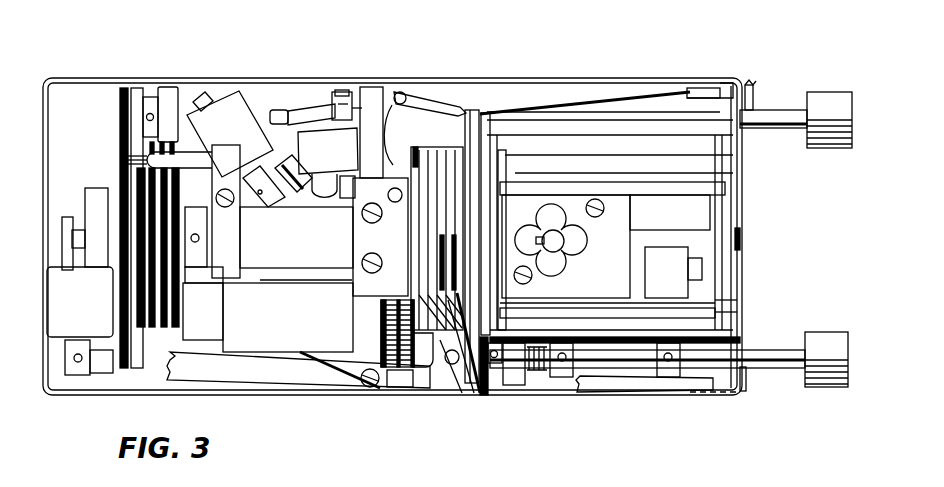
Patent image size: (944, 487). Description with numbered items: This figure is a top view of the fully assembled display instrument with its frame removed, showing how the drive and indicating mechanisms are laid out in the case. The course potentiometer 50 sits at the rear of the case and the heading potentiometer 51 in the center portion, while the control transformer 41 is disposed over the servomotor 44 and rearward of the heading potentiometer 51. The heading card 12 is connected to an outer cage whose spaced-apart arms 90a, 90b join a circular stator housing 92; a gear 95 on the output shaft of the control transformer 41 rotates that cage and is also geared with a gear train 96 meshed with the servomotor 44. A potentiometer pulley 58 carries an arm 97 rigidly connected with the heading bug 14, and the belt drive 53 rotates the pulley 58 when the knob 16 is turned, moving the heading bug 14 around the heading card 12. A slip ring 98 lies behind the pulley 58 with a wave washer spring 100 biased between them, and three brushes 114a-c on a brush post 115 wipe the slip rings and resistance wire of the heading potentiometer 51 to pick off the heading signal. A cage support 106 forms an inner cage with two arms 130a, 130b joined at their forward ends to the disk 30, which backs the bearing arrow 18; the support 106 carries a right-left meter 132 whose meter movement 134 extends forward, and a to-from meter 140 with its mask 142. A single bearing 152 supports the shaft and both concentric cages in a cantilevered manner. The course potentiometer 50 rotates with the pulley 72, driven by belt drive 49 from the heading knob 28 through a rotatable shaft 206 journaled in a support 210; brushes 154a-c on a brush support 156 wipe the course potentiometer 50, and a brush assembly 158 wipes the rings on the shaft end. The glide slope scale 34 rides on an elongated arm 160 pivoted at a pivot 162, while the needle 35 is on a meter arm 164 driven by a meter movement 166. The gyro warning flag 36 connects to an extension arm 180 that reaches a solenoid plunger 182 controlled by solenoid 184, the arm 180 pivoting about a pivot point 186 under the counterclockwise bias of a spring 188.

The heading card 12 is at (738, 270).
The heading bug 14 is at (743, 135).
The knob 16 is at (845, 360).
The bearing arrow 18 is at (742, 239).
The heading knob 28 is at (830, 95).
The disk 30 is at (733, 296).
The glide slope scale 34 is at (752, 85).
The needle 35 is at (758, 84).
The gyro warning flag 36 is at (748, 378).
The control transformer 41 is at (298, 331).
The servomotor 44 is at (212, 345).
The belt drive 49 is at (137, 88).
The course potentiometer 50 is at (175, 140).
The heading potentiometer 51 is at (472, 110).
The belt drive 53 is at (488, 113).
The potentiometer pulley 58 is at (507, 150).
The pulley 72 is at (126, 122).
The arm 90a is at (725, 342).
The arm 90b is at (723, 195).
The circular stator housing 92 is at (490, 393).
The gear 95 is at (400, 372).
The gear train 96 is at (448, 368).
The arm 97 is at (628, 97).
The slip ring 98 is at (390, 135).
The wave washer spring 100 is at (420, 150).
The cage support 106 is at (530, 117).
The brushes 114a-c is at (483, 398).
The brush post 115 is at (408, 280).
The arm 130a is at (690, 88).
The arm 130b is at (737, 306).
The right-left meter 132 is at (617, 280).
The meter movement 134 is at (560, 241).
The to-from meter 140 is at (680, 280).
The mask 142 is at (683, 221).
The bearing 152 is at (304, 250).
The leads 154a-c is at (145, 158).
The brush support 156 is at (204, 152).
The brush assembly 158 is at (80, 235).
The elongated arm 160 is at (667, 157).
The pivot 162 is at (404, 92).
The meter arm 164 is at (590, 127).
The meter movement 166 is at (343, 158).
The extension arm 180 is at (650, 383).
The solenoid plunger 182 is at (75, 378).
The solenoid 184 is at (96, 310).
The pivot point 186 is at (358, 390).
The spring 188 is at (322, 392).
The rotatable shaft 206 is at (296, 110).
The support 210 is at (166, 90).